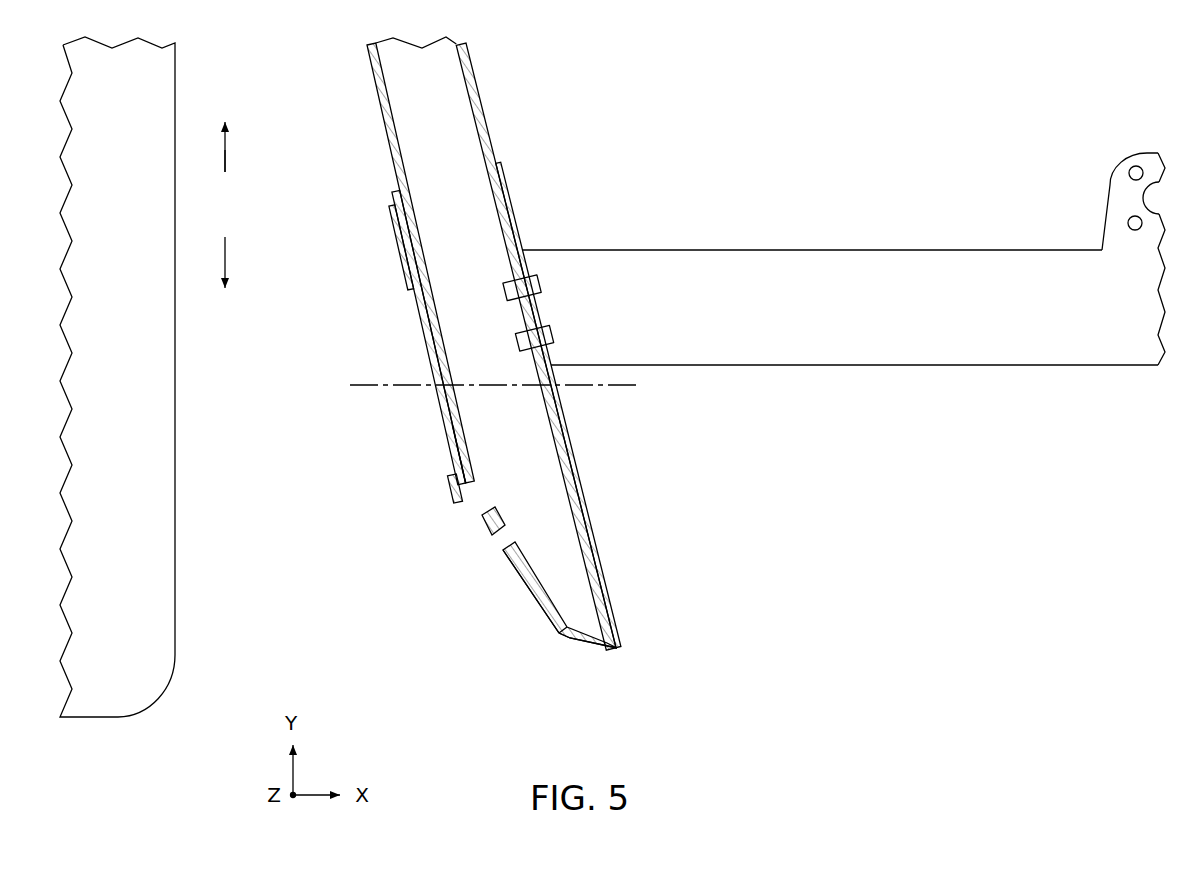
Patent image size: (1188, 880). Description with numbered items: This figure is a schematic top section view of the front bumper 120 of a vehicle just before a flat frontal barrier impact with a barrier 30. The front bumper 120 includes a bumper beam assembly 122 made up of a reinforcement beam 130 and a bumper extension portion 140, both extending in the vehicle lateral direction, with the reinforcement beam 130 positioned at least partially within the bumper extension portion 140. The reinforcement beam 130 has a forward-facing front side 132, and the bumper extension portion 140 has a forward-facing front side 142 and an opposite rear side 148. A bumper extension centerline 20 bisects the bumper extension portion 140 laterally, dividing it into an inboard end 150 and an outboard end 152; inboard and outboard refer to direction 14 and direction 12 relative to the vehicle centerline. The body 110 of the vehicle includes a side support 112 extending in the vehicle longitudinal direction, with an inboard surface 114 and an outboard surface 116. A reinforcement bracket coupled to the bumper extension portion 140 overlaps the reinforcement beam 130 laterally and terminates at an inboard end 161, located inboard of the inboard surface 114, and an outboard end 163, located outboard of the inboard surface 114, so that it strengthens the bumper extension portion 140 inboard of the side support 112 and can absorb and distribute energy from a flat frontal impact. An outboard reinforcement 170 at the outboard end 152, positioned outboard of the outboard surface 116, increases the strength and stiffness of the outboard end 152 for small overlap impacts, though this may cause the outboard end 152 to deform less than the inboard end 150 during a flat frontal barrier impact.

The outboard direction 12 is at (225, 255).
The inboard direction 14 is at (225, 152).
The bumper extension centerline 20 is at (380, 389).
The barrier 30 is at (178, 587).
The body 110 is at (843, 256).
The side support 112 is at (778, 230).
The inboard surface 114 is at (692, 248).
The outboard surface 116 is at (743, 368).
The front bumper 120 is at (448, 611).
The bumper beam assembly 122 is at (468, 630).
The reinforcement beam 130 is at (452, 388).
The front side 132 is at (378, 89).
The bumper extension portion 140 is at (442, 479).
The front side 142 is at (452, 438).
The rear side 148 is at (591, 504).
The inboard end 150 is at (366, 307).
The outboard end 152 is at (563, 655).
The inboard end 161 is at (384, 211).
The outboard end 163 is at (404, 291).
The outboard reinforcement 170 is at (526, 631).